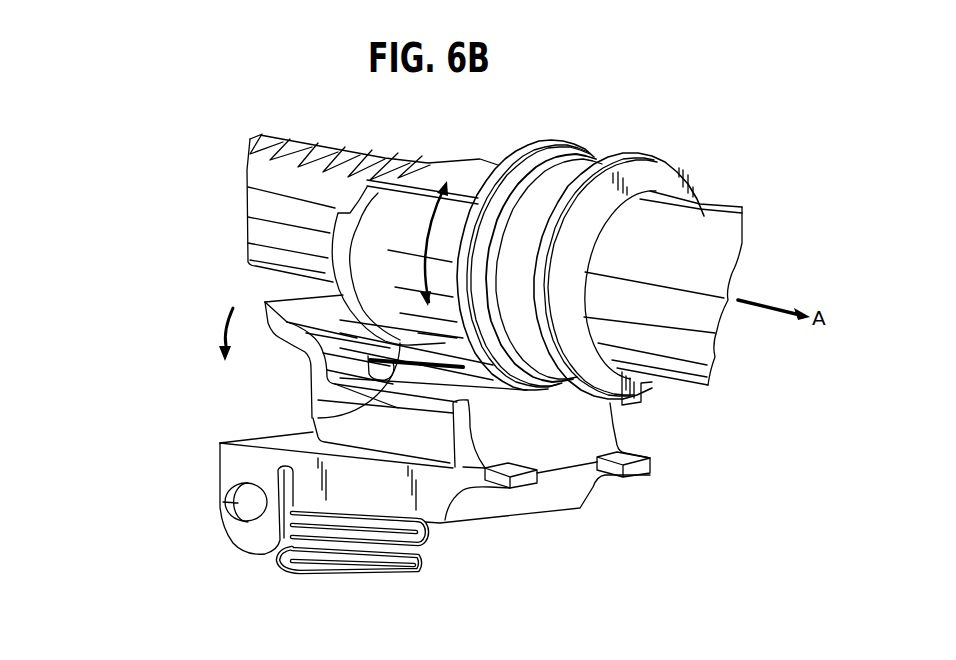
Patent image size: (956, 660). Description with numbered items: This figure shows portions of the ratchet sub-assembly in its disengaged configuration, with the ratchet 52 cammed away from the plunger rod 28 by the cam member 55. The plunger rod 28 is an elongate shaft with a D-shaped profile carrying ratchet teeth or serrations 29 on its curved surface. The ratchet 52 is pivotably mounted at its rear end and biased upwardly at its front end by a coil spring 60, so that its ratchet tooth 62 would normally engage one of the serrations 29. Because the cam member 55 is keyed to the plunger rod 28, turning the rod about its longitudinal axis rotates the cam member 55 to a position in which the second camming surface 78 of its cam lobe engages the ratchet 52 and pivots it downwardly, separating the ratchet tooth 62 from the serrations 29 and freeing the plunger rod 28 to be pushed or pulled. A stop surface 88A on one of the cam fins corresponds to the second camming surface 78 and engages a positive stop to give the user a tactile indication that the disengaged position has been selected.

The plunger rod 28 is at (245, 240).
The serrations 29 is at (297, 142).
The cam member 55 is at (632, 130).
The ratchet tooth 62 is at (292, 296).
The ratchet 52 is at (300, 358).
The second camming surface 78 is at (316, 418).
The coil spring 60 is at (430, 538).
The stop surface 88A is at (645, 391).